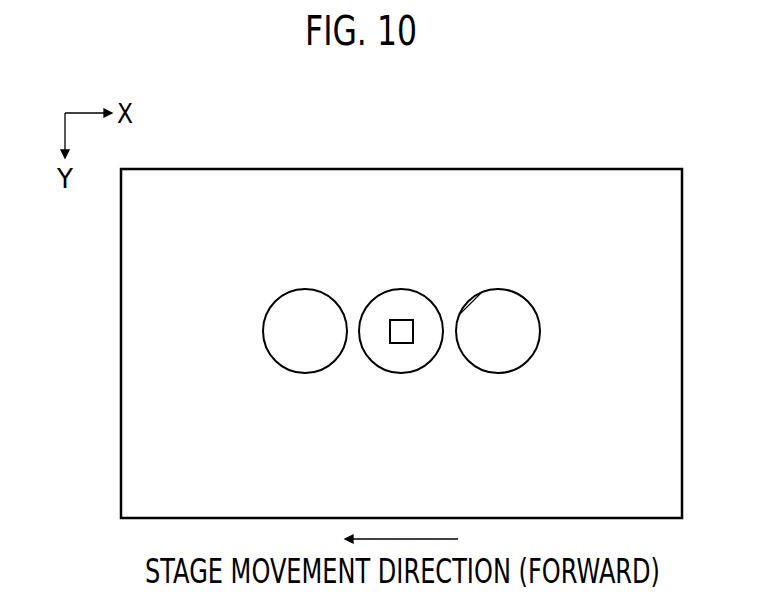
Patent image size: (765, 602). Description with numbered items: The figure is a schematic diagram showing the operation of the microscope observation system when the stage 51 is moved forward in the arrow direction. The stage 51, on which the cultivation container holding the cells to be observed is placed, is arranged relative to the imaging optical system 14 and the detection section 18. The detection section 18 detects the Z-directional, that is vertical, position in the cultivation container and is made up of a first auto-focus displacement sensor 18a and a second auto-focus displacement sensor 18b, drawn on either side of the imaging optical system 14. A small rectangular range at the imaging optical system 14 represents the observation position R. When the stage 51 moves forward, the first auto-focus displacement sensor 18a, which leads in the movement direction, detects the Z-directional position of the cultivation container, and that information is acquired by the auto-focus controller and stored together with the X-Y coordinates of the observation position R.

The stage 51 is at (121, 309).
The imaging optical system 14 is at (383, 372).
The observation position R is at (407, 343).
The detection section 18 is at (522, 212).
The first auto-focus displacement sensor 18a is at (497, 290).
The second auto-focus displacement sensor 18b is at (332, 294).